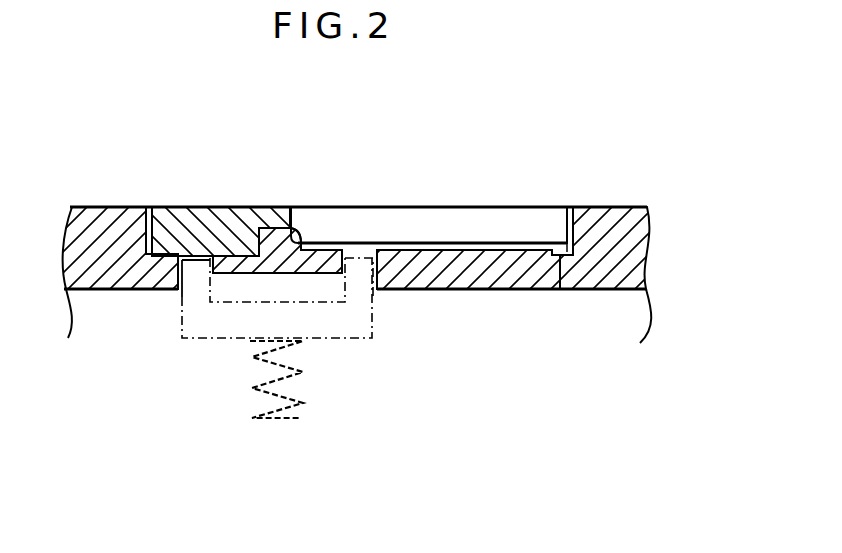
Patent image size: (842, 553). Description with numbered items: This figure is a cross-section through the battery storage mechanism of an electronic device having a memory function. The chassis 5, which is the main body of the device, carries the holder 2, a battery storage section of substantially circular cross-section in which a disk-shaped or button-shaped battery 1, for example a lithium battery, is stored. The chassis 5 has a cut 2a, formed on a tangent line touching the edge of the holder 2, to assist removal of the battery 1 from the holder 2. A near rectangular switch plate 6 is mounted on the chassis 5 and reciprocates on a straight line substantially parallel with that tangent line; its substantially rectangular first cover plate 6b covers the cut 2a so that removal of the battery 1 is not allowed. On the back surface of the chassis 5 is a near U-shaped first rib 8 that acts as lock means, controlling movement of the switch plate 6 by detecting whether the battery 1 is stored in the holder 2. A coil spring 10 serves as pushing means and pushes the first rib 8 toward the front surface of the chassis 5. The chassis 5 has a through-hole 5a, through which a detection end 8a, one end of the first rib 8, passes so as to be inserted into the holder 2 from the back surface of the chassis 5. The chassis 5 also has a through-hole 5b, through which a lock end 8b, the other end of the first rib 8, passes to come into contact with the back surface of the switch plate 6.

The battery 1 is at (474, 223).
The holder 2 is at (565, 291).
The cut 2a is at (290, 237).
The chassis 5 is at (81, 214).
The through-hole 5a is at (410, 290).
The through-hole 5b is at (176, 292).
The switch plate 6 is at (187, 225).
The first cover plate 6b is at (286, 221).
The first rib 8 is at (368, 348).
The detection end 8a is at (363, 278).
The lock end 8b is at (180, 293).
The coil spring 10 is at (295, 423).